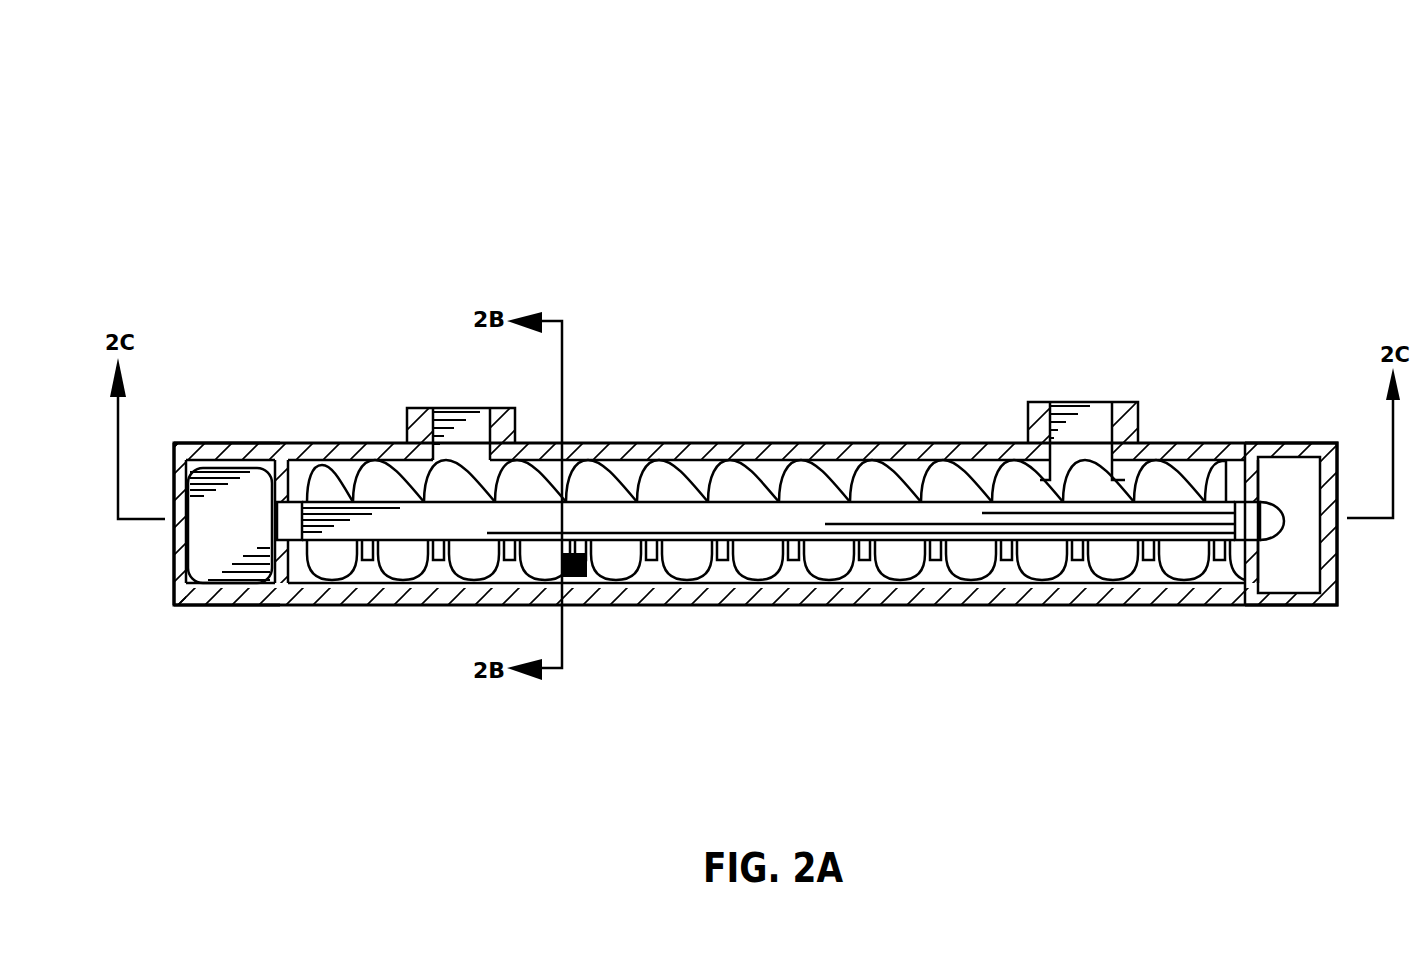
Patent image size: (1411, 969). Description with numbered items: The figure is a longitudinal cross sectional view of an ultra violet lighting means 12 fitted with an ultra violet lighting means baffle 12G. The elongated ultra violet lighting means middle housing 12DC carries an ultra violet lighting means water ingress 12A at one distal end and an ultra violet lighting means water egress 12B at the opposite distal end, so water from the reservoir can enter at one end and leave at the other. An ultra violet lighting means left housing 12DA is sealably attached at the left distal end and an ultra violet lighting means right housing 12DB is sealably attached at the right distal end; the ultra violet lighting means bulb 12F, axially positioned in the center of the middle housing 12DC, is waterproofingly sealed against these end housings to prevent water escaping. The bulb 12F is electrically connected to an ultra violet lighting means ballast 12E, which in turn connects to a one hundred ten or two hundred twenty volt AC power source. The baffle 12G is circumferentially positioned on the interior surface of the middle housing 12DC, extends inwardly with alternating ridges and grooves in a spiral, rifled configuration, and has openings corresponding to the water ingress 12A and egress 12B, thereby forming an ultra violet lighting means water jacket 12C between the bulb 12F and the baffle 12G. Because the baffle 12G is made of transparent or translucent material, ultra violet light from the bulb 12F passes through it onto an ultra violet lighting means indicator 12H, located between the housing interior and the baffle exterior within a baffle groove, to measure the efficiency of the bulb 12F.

The ultra violet lighting means 12 is at (772, 58).
The ultra violet lighting means water ingress 12A is at (457, 360).
The ultra violet lighting means water egress 12B is at (1074, 390).
The ultra violet lighting means water jacket 12C is at (870, 470).
The ultra violet lighting means left housing 12DA is at (196, 443).
The ultra violet lighting means right housing 12DB is at (1261, 457).
The ultra violet lighting means middle housing 12DC is at (790, 445).
The ultra violet lighting means ballast 12E is at (250, 492).
The ultra violet lighting means bulb 12F is at (371, 525).
The ultra violet lighting means baffle 12G is at (607, 470).
The ultra violet lighting means indicator 12H is at (575, 570).